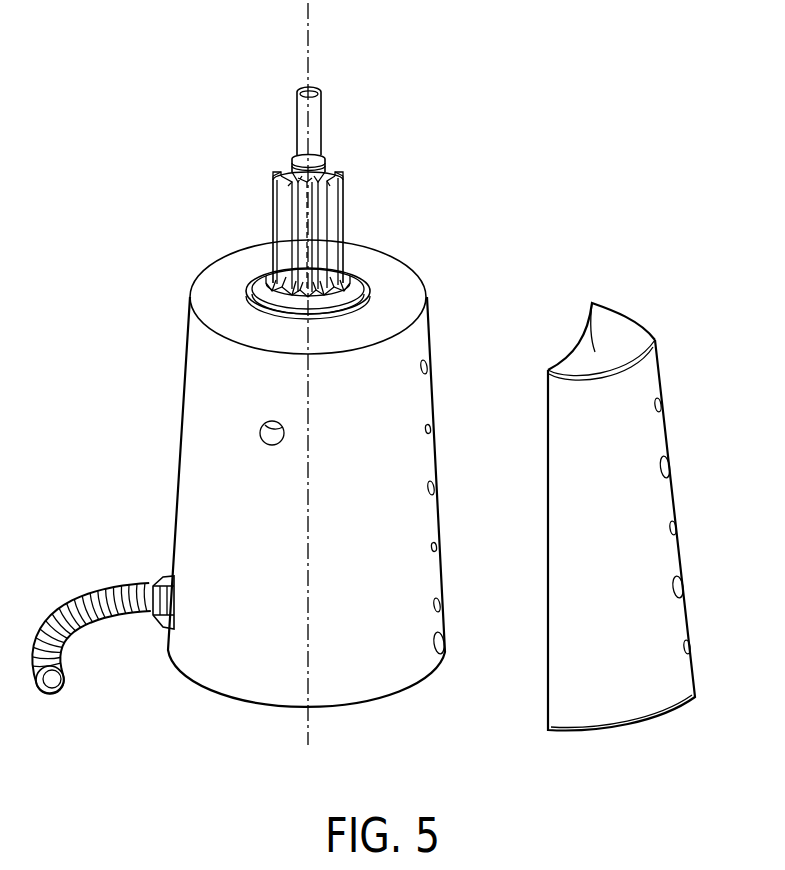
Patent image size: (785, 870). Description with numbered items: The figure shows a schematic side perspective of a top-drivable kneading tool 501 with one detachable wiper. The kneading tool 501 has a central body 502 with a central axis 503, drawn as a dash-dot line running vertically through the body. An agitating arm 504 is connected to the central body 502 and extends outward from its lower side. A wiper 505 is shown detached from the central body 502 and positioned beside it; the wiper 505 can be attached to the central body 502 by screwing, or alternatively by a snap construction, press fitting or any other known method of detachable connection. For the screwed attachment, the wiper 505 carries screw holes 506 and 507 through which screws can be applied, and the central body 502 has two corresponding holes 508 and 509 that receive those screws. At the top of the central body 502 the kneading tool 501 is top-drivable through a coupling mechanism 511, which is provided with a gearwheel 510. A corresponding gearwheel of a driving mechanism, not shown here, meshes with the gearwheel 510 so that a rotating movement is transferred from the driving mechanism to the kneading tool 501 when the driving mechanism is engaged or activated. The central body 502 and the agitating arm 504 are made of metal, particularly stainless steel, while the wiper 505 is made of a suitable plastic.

The kneading tool 501 is at (160, 331).
The central body 502 is at (195, 460).
The central axis 503 is at (308, 40).
The agitating arm 504 is at (70, 585).
The wiper 505 is at (605, 680).
The screw hole 506 is at (668, 468).
The screw hole 507 is at (681, 587).
The hole 508 is at (431, 428).
The hole 509 is at (436, 547).
The gearwheel 510 is at (344, 213).
The coupling mechanism 511 is at (343, 127).